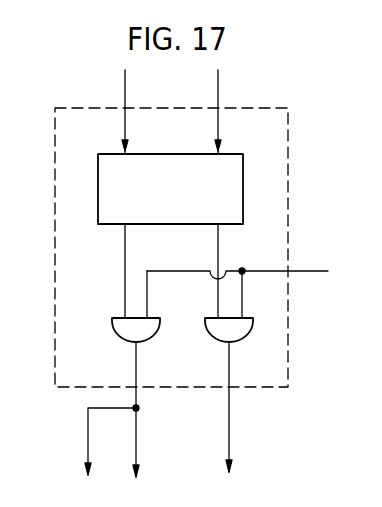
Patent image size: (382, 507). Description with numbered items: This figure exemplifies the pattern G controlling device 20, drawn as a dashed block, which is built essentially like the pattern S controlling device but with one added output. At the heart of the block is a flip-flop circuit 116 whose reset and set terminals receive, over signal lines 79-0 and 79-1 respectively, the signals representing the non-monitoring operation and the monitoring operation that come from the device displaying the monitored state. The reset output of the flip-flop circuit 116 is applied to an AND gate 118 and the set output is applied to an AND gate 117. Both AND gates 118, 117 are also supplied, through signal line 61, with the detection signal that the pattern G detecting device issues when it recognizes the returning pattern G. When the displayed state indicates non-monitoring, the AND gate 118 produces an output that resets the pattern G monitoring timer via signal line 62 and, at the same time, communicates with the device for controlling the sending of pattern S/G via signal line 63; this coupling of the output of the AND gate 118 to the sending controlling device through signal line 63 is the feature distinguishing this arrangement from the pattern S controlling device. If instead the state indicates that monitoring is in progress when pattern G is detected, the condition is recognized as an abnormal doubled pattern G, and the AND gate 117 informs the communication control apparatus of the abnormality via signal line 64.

The pattern G controlling device 20 is at (288, 160).
The flip-flop circuit 116 is at (243, 166).
The signal line 79-0 is at (125, 101).
The signal line 79-1 is at (218, 101).
The signal line 61 is at (297, 271).
The AND gate 118 is at (157, 326).
The AND gate 117 is at (250, 326).
The signal line 62 is at (136, 432).
The signal line 63 is at (88, 432).
The signal line 64 is at (229, 432).